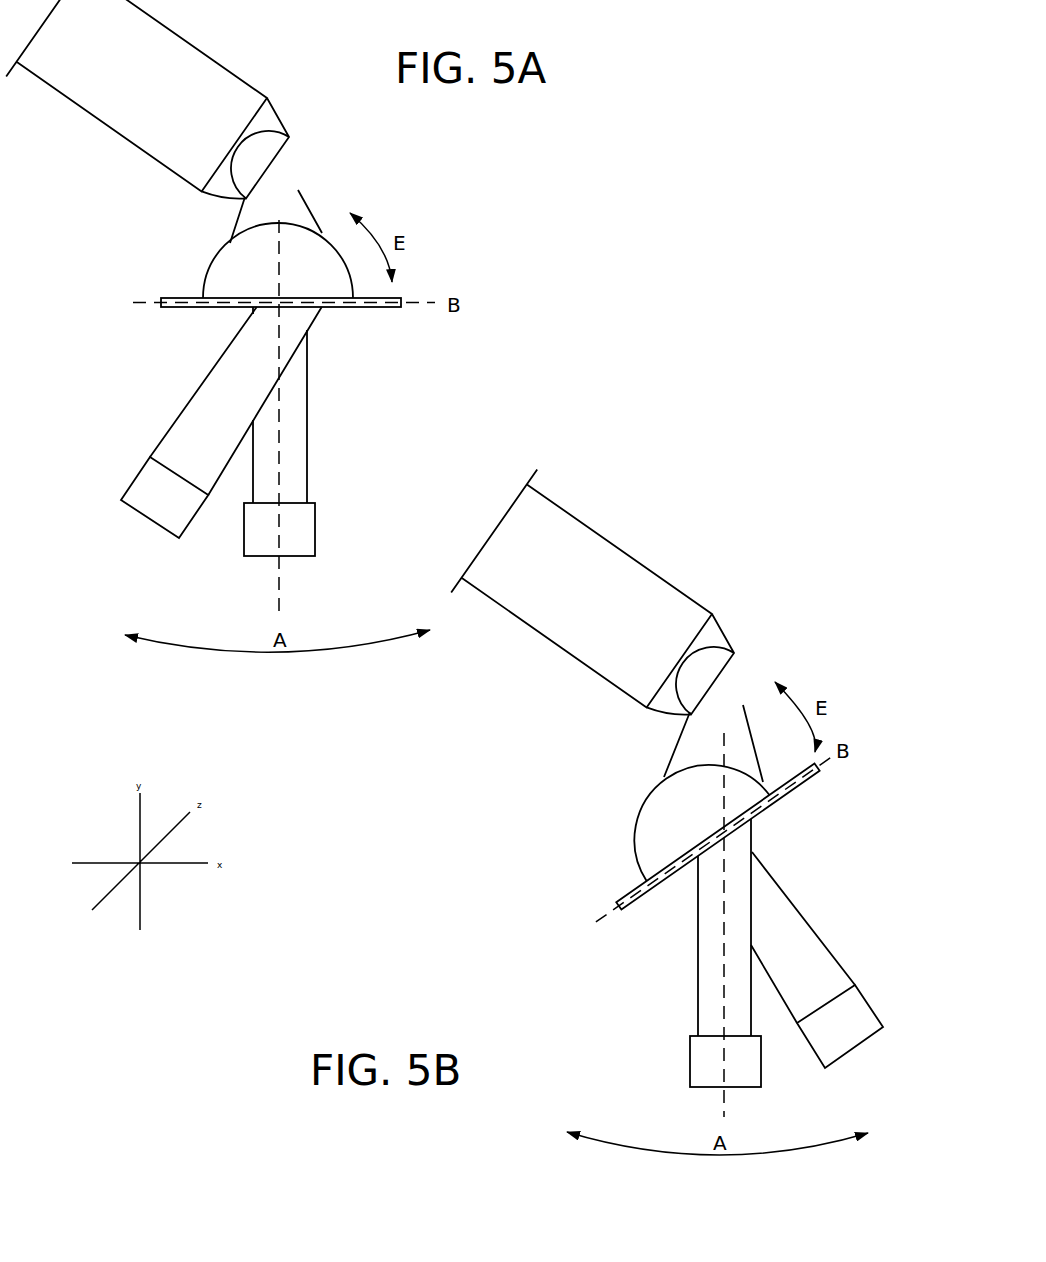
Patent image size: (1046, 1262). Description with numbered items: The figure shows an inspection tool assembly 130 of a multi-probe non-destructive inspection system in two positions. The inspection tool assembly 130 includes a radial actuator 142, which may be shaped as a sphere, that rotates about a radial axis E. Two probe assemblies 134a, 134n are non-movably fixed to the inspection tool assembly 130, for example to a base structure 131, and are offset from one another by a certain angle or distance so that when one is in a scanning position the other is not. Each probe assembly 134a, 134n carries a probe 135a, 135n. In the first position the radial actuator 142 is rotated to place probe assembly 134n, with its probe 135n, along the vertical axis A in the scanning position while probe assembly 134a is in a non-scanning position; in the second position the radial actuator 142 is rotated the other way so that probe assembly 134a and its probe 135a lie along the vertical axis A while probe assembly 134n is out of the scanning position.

In FIG. 5A, the inspection tool assembly 130 is at (474, 258).
In FIG. 5B, the inspection tool assembly 130 is at (516, 818).
In FIG. 5A, the base structure 131 is at (158, 304).
In FIG. 5B, the base structure 131 is at (611, 898).
In FIG. 5A, the probe assembly 134a is at (172, 366).
In FIG. 5B, the probe assembly 134a is at (678, 968).
In FIG. 5A, the probe assembly 134n is at (322, 397).
In FIG. 5B, the probe assembly 134n is at (808, 887).
In FIG. 5A, the probe 135a is at (141, 503).
In FIG. 5B, the probe 135a is at (692, 1063).
In FIG. 5A, the probe 135n is at (315, 540).
In FIG. 5B, the probe 135n is at (840, 1054).
In FIG. 5A, the radial actuator 142 is at (226, 266).
In FIG. 5B, the radial actuator 142 is at (640, 828).